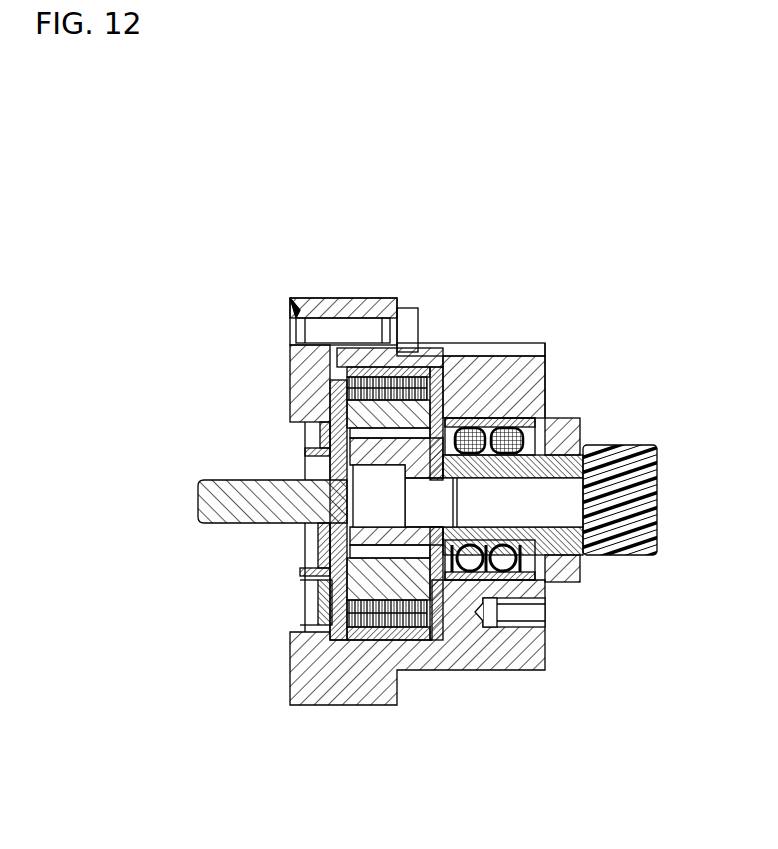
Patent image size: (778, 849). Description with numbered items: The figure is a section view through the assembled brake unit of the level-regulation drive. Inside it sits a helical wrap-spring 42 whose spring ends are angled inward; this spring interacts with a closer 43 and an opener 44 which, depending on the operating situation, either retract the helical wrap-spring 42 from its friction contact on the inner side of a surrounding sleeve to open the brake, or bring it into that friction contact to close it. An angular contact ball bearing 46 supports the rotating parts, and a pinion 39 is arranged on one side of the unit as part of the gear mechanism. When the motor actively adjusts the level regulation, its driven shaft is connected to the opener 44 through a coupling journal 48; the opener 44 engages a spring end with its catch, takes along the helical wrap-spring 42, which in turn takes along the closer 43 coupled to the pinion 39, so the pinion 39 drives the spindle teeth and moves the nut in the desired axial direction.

The pinion 39 is at (627, 457).
The helical wrap-spring 42 is at (428, 358).
The closer 43 is at (397, 555).
The opener 44 is at (343, 592).
The angular contact ball bearing 46 is at (497, 412).
The coupling journal 48 is at (223, 497).